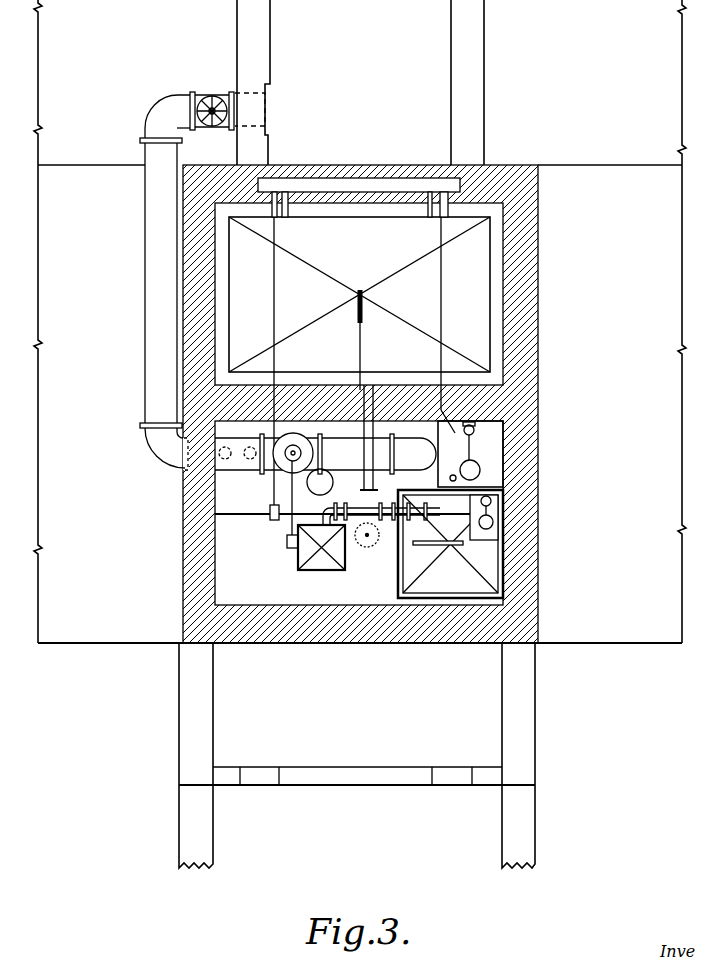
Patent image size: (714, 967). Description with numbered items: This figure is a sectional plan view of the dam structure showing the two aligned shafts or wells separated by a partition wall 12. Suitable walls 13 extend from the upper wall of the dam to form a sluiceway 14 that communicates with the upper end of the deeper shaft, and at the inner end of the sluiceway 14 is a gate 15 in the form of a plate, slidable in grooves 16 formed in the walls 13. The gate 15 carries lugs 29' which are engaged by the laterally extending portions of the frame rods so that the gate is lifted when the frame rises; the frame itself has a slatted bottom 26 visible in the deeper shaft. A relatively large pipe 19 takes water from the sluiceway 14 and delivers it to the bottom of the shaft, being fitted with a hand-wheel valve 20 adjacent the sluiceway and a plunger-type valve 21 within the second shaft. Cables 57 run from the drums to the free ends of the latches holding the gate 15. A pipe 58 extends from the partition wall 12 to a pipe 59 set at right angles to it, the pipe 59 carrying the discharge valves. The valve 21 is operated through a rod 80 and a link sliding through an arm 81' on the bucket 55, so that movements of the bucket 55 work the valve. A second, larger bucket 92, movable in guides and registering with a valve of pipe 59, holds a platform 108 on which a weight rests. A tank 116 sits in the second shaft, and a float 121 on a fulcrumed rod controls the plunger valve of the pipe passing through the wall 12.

The partition wall 12 is at (412, 423).
The walls 13 is at (265, 60).
The sluiceway 14 is at (306, 91).
The gate 15 is at (375, 185).
The grooves 16 is at (270, 167).
The pipe 19 is at (153, 338).
The valve 20 is at (207, 93).
The valve 21 is at (282, 467).
The slatted bottom 26 is at (538, 237).
The lug 29' is at (361, 181).
The bucket 55 is at (313, 568).
The cable 57 is at (272, 430).
The pipe 58 is at (370, 455).
The pipe 59 is at (336, 506).
The rod 80 is at (288, 522).
The arm 81' is at (274, 526).
The second bucket 92 is at (455, 600).
The platform 108 is at (487, 535).
The tank 116 is at (485, 482).
The float 121 is at (467, 468).